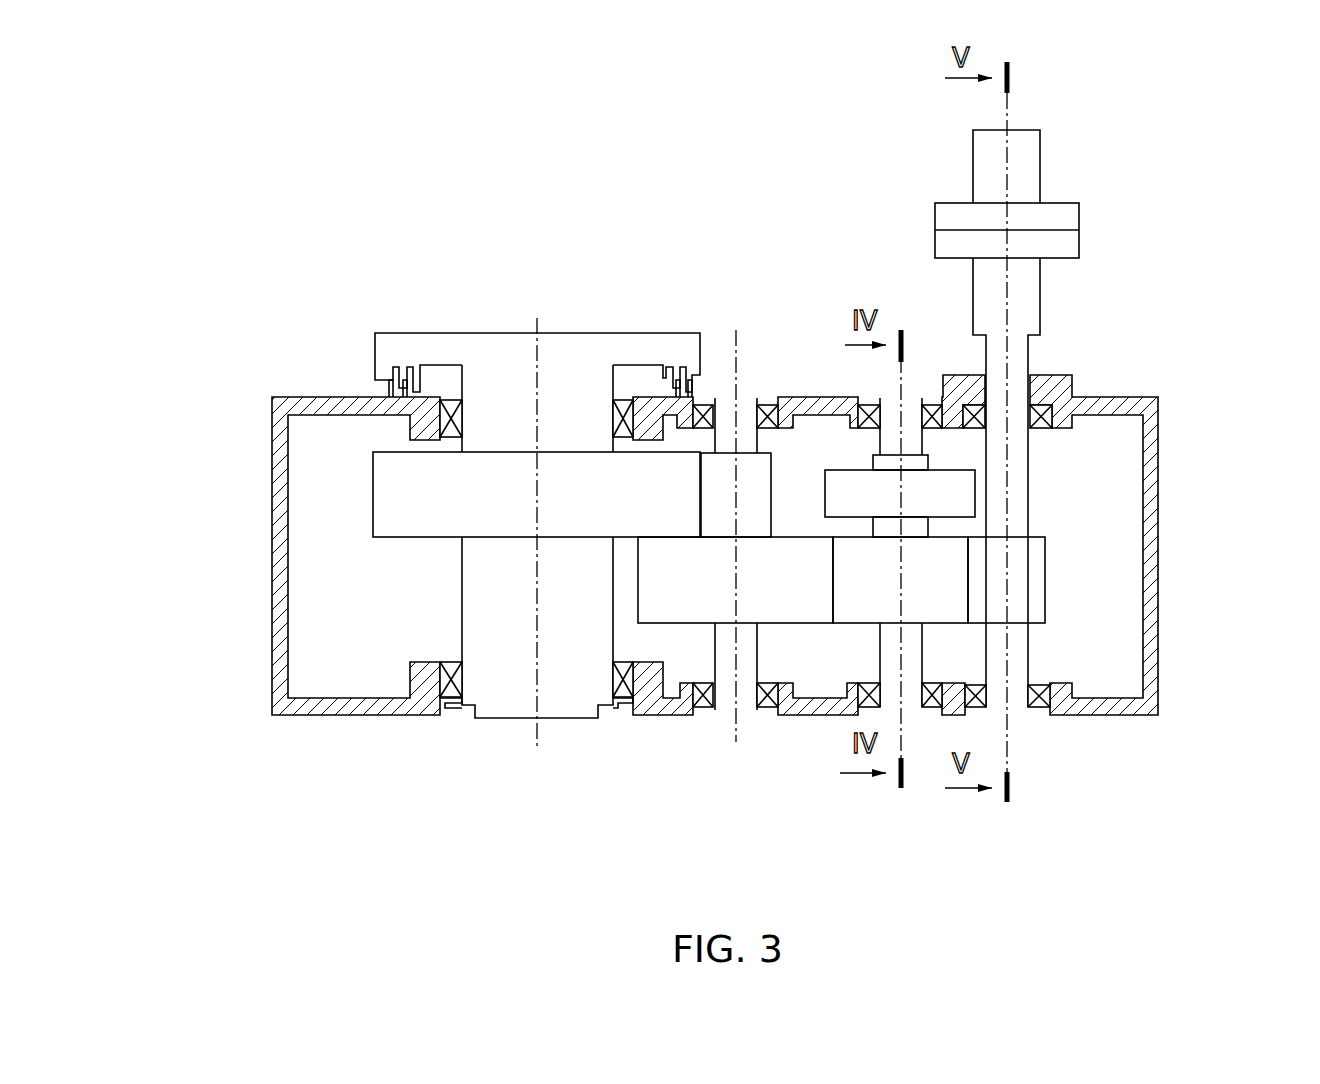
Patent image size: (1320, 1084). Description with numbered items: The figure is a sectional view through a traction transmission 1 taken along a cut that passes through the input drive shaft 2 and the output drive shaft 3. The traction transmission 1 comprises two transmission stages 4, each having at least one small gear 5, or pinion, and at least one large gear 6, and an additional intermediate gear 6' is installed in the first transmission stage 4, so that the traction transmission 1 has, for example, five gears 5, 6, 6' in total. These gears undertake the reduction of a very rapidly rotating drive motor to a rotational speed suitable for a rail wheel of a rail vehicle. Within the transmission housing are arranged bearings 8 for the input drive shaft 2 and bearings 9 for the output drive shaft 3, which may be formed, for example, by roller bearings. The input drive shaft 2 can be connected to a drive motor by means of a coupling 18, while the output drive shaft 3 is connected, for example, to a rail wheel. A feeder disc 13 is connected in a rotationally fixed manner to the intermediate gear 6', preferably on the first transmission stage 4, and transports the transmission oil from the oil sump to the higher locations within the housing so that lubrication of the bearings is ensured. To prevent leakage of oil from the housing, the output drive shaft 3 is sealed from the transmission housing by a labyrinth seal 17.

The traction transmission 1 is at (258, 748).
The input drive shaft 2 is at (1015, 358).
The output drive shaft 3 is at (505, 610).
The transmission stage 4 is at (663, 730).
The small gear 5 is at (752, 467).
The large gear 6 is at (603, 513).
The intermediate gear 6' is at (859, 690).
The bearing for the input drive shaft 8 is at (1047, 410).
The bearing for the output drive shaft 9 is at (447, 410).
The feeder disc 13 is at (850, 490).
The labyrinth seal 17 is at (378, 367).
The coupling 18 is at (1083, 203).